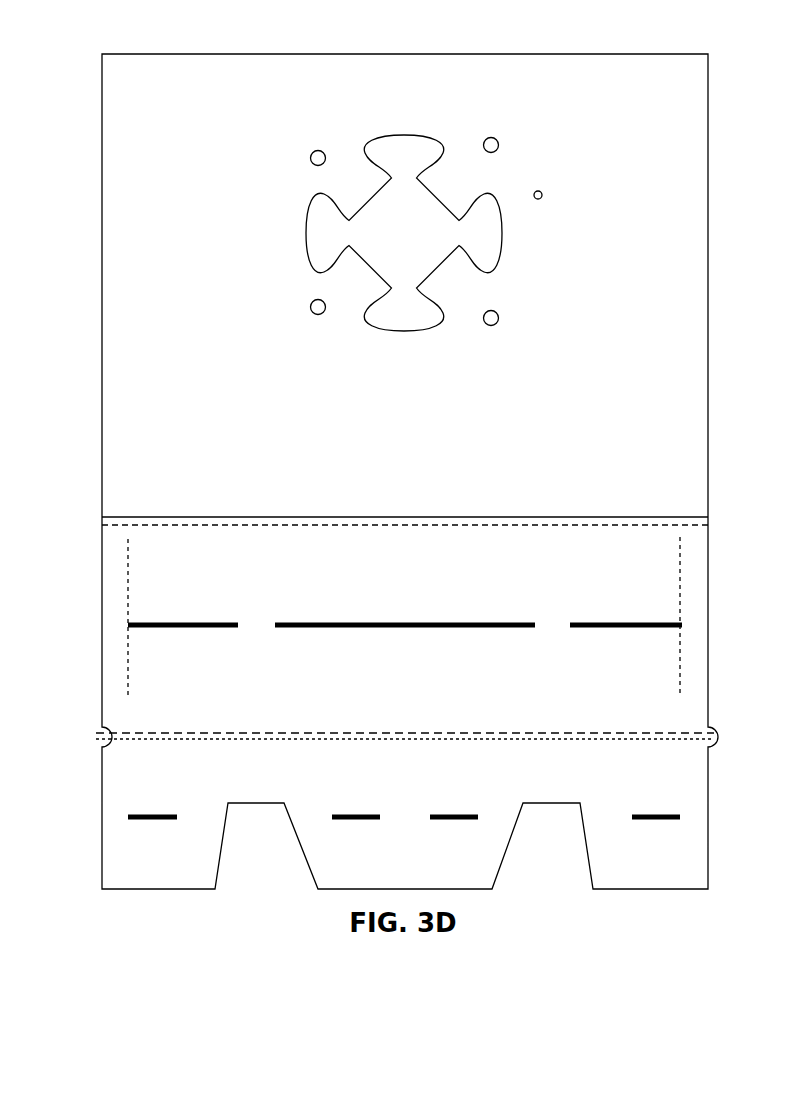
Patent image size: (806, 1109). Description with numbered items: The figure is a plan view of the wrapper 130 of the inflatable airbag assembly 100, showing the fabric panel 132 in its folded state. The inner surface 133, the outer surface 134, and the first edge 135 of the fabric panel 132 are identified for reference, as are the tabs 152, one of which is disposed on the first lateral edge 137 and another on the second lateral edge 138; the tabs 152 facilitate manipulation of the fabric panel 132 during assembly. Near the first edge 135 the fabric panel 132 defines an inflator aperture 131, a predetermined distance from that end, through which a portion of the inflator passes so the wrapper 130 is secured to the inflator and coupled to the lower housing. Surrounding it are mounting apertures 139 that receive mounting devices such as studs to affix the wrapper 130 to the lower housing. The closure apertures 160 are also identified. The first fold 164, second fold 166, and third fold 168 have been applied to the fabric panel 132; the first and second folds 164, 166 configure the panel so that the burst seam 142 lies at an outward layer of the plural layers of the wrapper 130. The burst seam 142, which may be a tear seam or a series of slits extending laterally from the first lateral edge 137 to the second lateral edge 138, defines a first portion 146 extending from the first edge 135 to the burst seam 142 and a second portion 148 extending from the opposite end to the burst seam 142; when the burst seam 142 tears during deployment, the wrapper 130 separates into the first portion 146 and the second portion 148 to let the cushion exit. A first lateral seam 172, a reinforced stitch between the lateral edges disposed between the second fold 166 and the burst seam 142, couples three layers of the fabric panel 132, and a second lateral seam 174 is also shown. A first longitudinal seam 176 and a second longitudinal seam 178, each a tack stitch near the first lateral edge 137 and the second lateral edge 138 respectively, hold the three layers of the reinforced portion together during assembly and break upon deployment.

The inflatable airbag assembly 100 is at (93, 218).
The wrapper 130 is at (383, 405).
The inflator aperture 131 is at (307, 232).
The fabric panel 132 is at (303, 468).
The inner surface 133 is at (125, 358).
The outer surface 134 is at (125, 147).
The first edge 135 is at (641, 54).
The first lateral edge 137 is at (101, 283).
The second lateral edge 138 is at (710, 300).
The mounting apertures 139 is at (312, 152).
The burst seam 142 is at (326, 621).
The first portion 146 is at (277, 687).
The second portion 148 is at (242, 601).
The tabs 152 is at (91, 740).
The closure apertures 160 is at (167, 821).
The first fold 164 is at (450, 732).
The second fold 166 is at (453, 517).
The third fold 168 is at (618, 890).
The first lateral seam 172 is at (505, 526).
The second lateral seam 174 is at (437, 741).
The first longitudinal seam 176 is at (130, 556).
The second longitudinal seam 178 is at (679, 570).